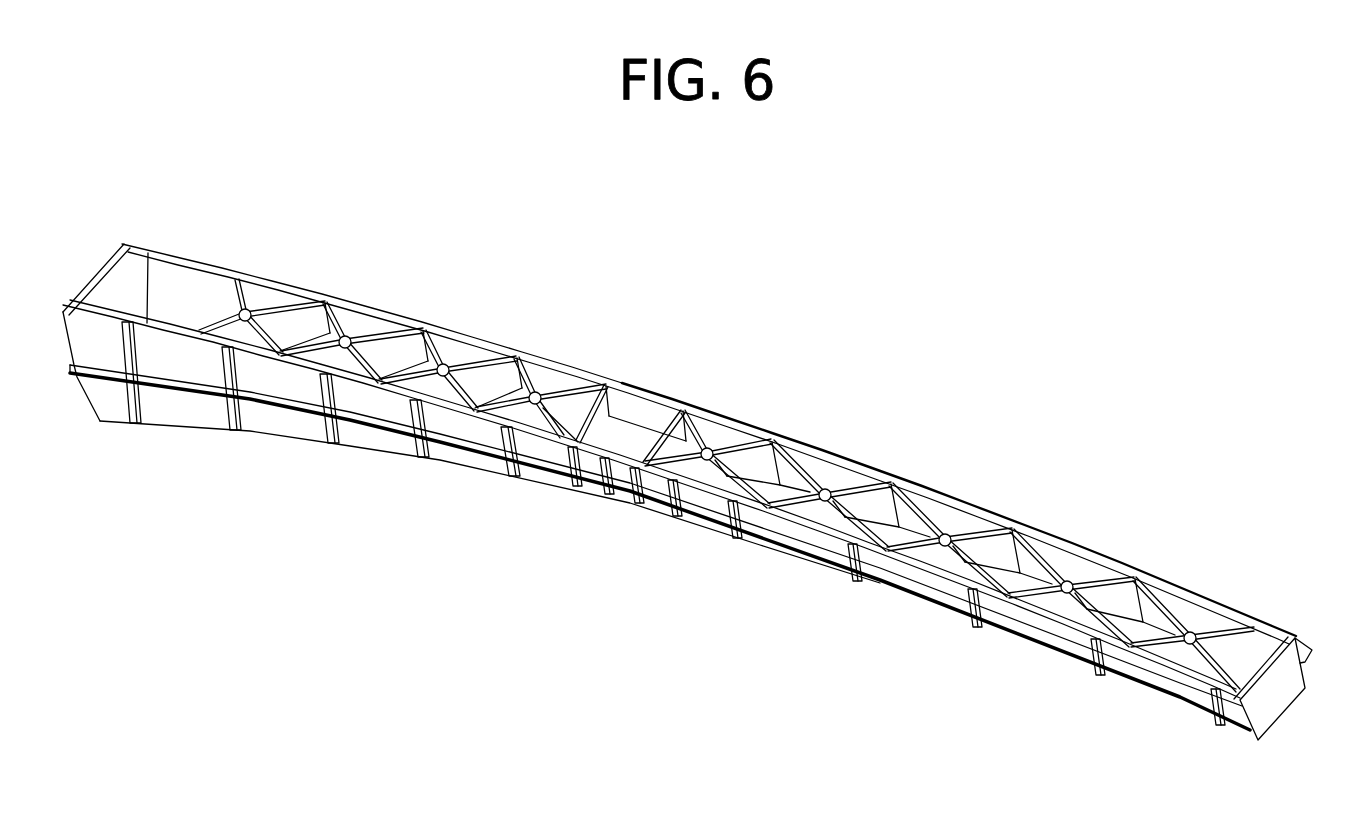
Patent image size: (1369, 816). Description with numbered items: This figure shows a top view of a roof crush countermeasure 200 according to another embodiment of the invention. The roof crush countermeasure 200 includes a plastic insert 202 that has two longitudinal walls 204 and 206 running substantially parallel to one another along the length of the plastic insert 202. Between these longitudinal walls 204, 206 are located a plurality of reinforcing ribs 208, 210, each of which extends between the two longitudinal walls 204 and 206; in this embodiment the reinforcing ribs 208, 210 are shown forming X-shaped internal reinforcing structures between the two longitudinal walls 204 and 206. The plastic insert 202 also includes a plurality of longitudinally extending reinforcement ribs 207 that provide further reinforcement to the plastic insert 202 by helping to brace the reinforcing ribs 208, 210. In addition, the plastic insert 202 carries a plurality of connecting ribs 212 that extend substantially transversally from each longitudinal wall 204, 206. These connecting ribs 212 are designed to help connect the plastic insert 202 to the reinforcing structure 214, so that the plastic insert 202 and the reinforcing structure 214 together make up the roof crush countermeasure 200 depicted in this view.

The roof crush countermeasure 200 is at (687, 478).
The plastic insert 202 is at (679, 457).
The longitudinal wall 204 is at (633, 465).
The longitudinal wall 206 is at (388, 302).
The longitudinally extending reinforcement ribs 207 is at (1110, 612).
The reinforcing ribs 208 is at (852, 488).
The reinforcing ribs 210 is at (317, 373).
The connecting ribs 212 is at (977, 607).
The reinforcing structure 214 is at (656, 521).